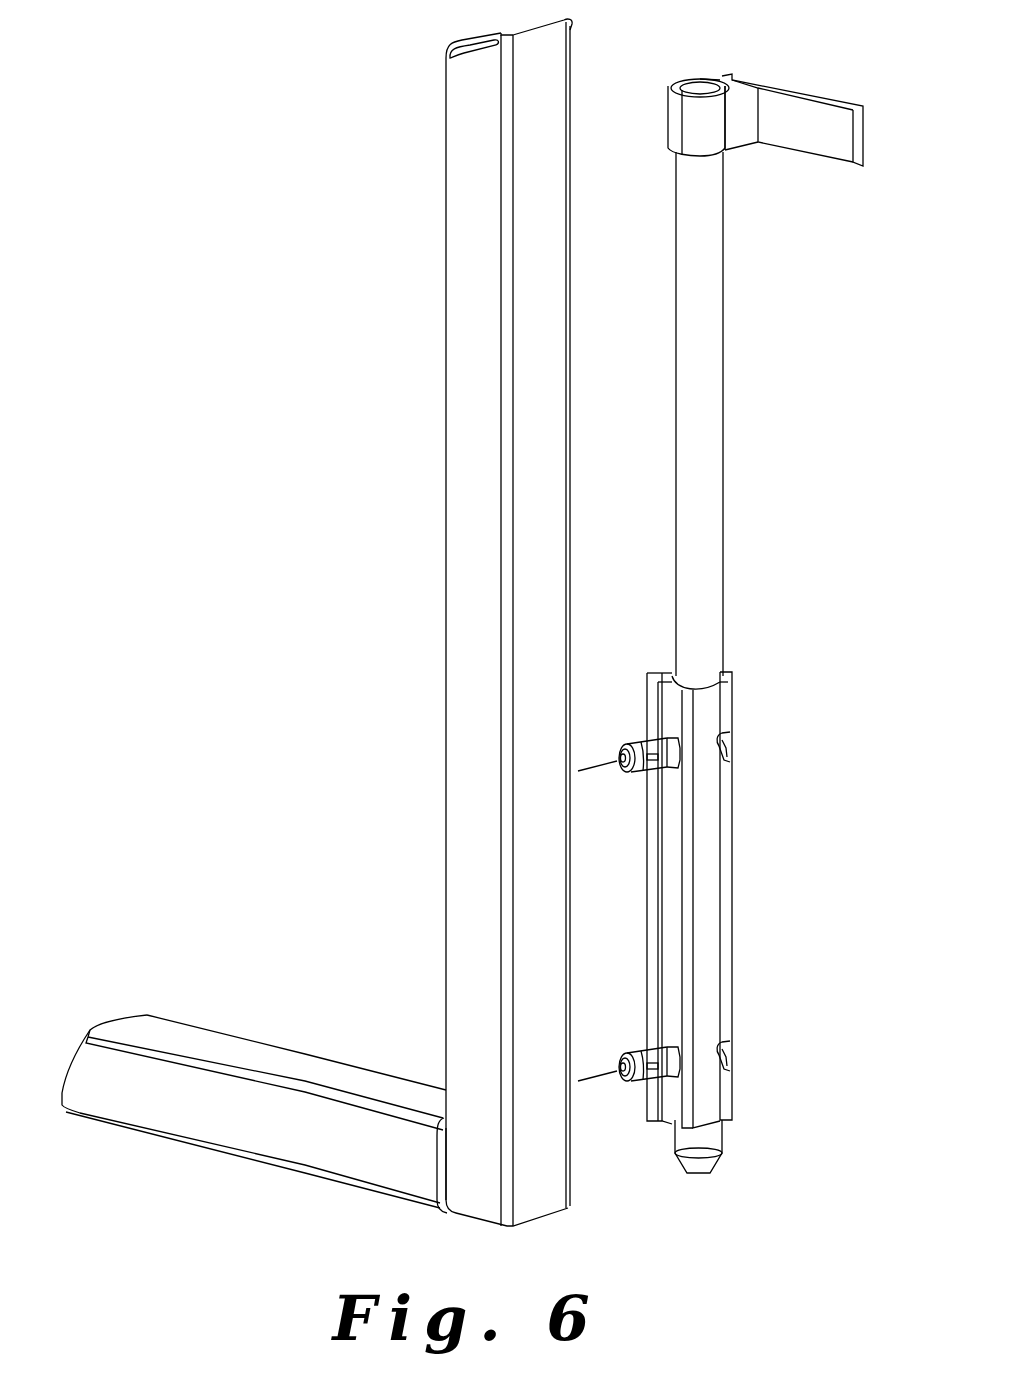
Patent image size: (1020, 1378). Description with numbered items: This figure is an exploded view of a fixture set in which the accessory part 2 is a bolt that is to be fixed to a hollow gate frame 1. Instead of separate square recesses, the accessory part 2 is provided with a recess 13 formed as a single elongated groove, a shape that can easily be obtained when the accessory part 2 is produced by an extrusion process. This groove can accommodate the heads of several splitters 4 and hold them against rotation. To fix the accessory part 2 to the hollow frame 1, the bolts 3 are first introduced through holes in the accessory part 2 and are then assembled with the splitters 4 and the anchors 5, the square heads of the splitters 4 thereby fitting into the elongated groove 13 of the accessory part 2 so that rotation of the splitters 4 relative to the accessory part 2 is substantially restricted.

The hollow gate frame 1 is at (317, 622).
The accessory part 2 is at (705, 838).
The bolt 3 is at (630, 770).
The splitter 4 is at (678, 752).
The anchor 5 is at (691, 732).
The recess 13 is at (673, 920).